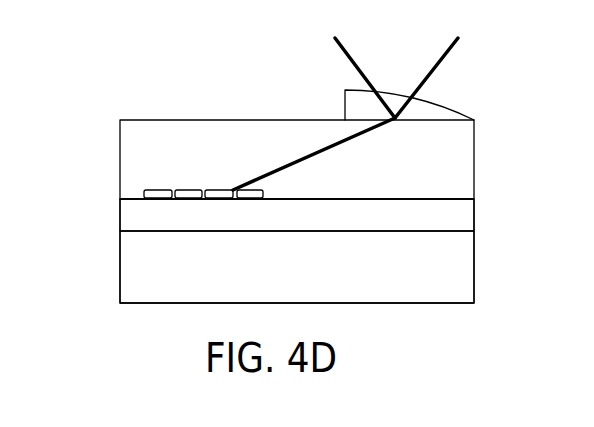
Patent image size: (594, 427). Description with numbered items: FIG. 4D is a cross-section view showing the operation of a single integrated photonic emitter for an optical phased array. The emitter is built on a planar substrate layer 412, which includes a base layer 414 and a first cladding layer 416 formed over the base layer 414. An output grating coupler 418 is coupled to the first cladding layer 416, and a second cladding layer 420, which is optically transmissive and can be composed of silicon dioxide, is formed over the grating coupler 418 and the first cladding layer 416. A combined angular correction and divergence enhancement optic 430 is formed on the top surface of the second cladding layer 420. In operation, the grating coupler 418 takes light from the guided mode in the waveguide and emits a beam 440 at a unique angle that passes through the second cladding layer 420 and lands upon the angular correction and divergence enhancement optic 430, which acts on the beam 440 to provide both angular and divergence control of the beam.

The planar substrate layer 412 is at (300, 251).
The base layer 414 is at (129, 275).
The first cladding layer 416 is at (129, 218).
The output grating coupler 418 is at (168, 190).
The second cladding layer 420 is at (461, 148).
The combined angular correction and divergence enhancement optic 430 is at (447, 103).
The beam 440 is at (296, 160).